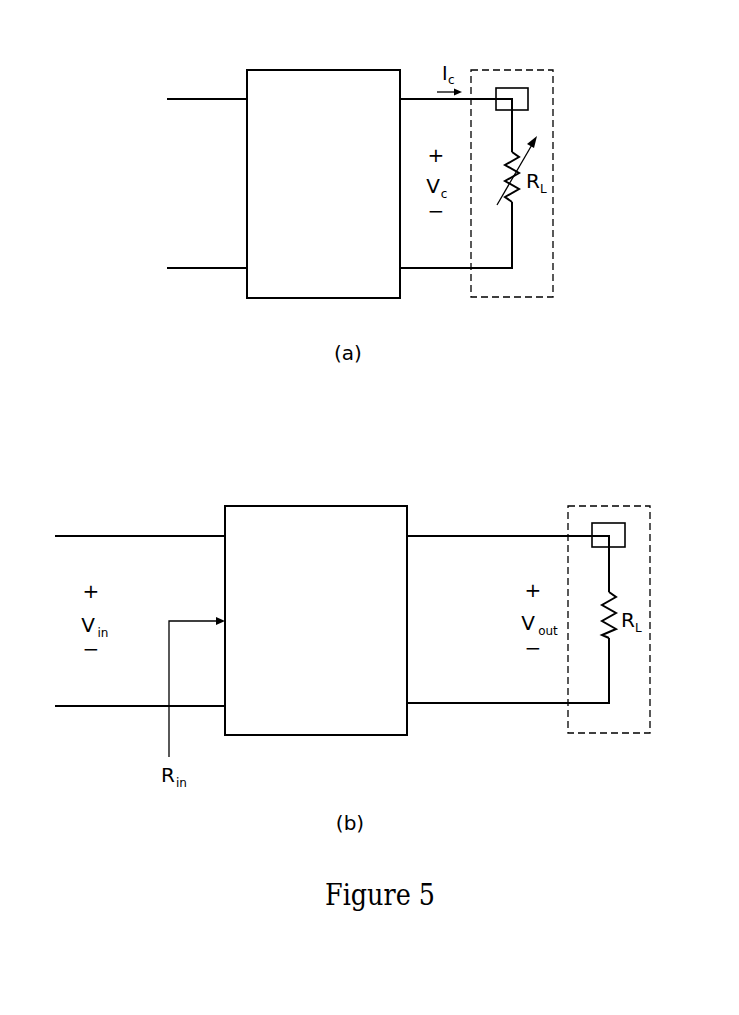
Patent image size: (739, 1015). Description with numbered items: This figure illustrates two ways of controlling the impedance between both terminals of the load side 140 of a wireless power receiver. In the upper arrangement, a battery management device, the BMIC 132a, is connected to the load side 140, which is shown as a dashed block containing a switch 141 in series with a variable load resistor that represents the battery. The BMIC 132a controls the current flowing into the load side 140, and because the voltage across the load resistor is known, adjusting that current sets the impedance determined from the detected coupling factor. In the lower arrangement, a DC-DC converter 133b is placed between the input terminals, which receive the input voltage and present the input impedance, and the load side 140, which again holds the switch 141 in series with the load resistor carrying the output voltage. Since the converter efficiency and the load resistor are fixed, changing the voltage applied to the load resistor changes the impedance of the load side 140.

The BMIC (Battery Management IC) 132a is at (309, 70).
The DC-DC converter 133b is at (316, 506).
The load side 140 is at (528, 70).
The switch 141 is at (528, 97).